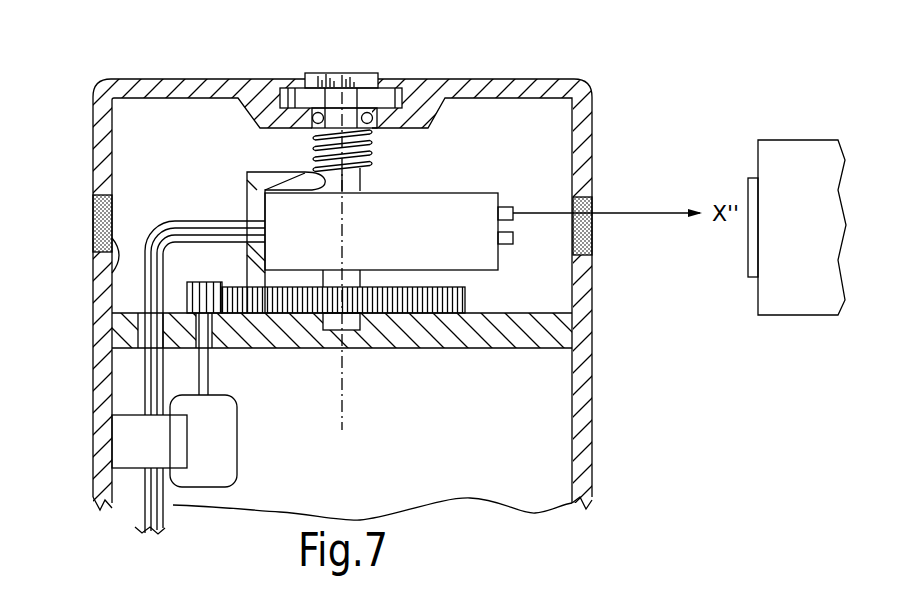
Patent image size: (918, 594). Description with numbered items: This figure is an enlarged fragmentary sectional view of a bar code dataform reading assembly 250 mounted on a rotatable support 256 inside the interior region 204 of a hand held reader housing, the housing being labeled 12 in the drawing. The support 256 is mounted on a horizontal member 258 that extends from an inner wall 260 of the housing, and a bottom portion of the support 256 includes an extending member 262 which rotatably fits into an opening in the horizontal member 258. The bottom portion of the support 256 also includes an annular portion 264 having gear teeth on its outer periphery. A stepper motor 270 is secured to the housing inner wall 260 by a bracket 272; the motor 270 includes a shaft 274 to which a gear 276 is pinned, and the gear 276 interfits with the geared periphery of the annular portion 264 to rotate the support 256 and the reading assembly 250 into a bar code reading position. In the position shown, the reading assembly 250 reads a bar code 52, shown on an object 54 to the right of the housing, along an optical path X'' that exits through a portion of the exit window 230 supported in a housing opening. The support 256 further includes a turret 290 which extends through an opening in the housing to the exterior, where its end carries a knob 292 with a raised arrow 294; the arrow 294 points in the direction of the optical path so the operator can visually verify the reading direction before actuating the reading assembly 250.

The housing 12 is at (584, 400).
The bar code 52 is at (748, 252).
The target member 54 is at (808, 246).
The interior region 204 is at (470, 489).
The exit window 230 is at (94, 210).
The bar code dataform reading assembly 250 is at (442, 249).
The rotatable support 256 is at (262, 183).
The horizontal member 258 is at (507, 333).
The inner wall 260 is at (96, 245).
The extending member 262 is at (349, 322).
The annular portion 264 is at (465, 303).
The stepper motor 270 is at (223, 424).
The bracket 272 is at (173, 503).
The shaft 274 is at (206, 360).
The gear 276 is at (208, 282).
The turret 290 is at (337, 115).
The knob 292 is at (386, 100).
The raised arrow 294 is at (321, 82).